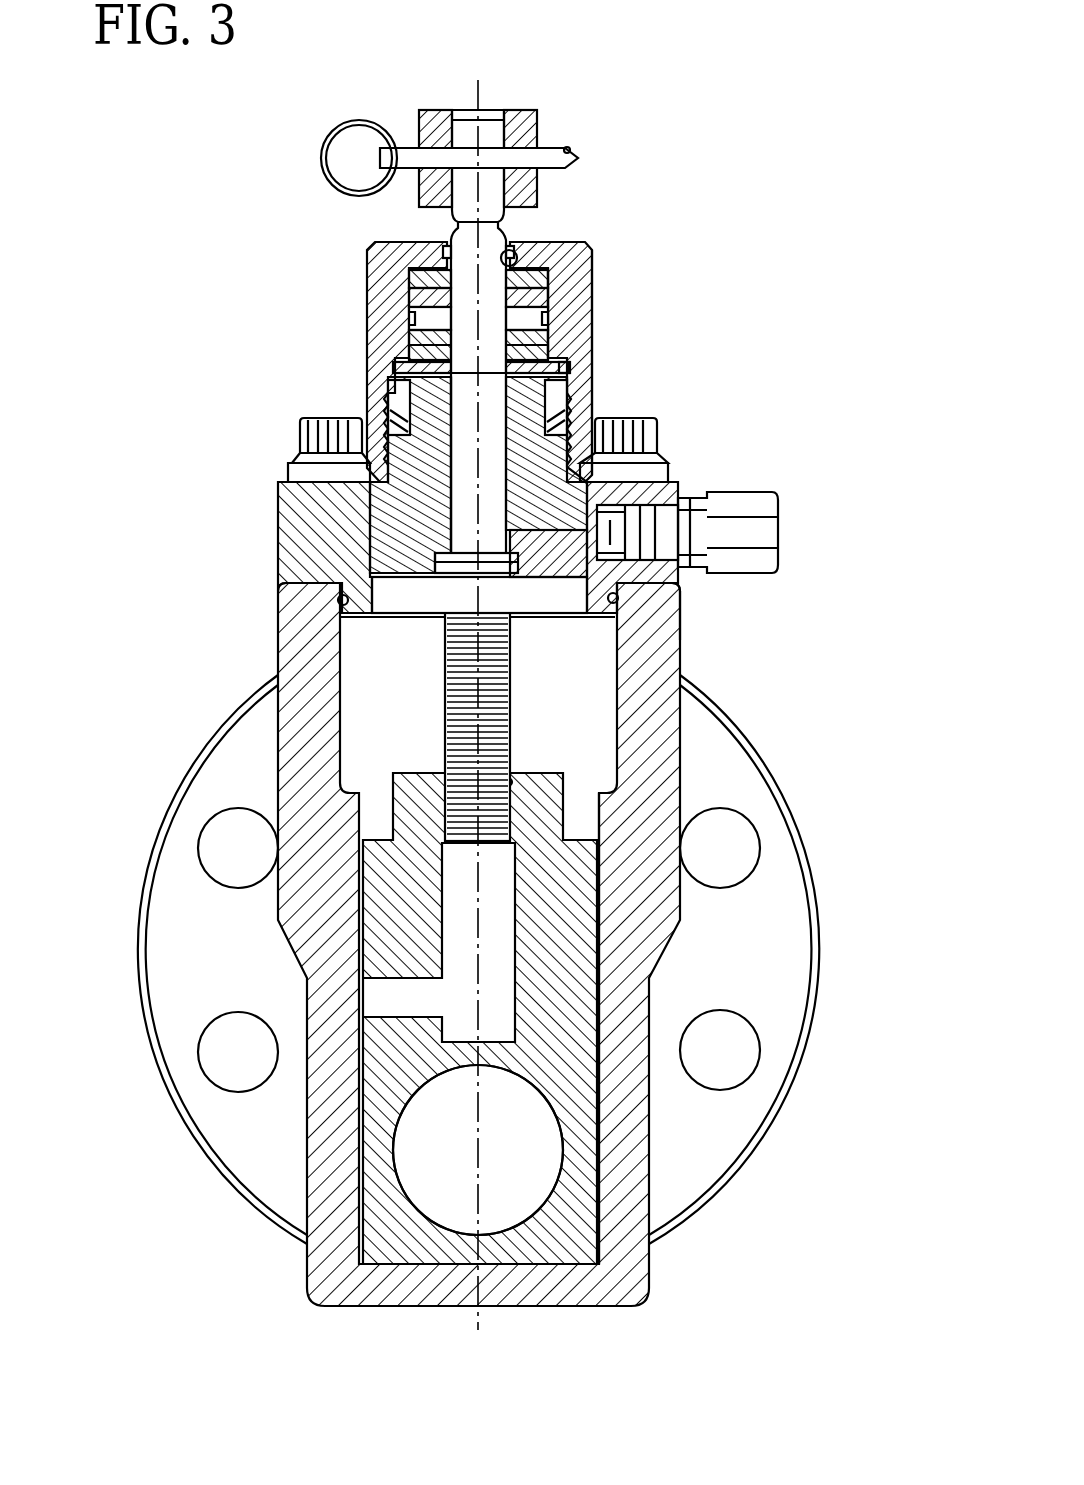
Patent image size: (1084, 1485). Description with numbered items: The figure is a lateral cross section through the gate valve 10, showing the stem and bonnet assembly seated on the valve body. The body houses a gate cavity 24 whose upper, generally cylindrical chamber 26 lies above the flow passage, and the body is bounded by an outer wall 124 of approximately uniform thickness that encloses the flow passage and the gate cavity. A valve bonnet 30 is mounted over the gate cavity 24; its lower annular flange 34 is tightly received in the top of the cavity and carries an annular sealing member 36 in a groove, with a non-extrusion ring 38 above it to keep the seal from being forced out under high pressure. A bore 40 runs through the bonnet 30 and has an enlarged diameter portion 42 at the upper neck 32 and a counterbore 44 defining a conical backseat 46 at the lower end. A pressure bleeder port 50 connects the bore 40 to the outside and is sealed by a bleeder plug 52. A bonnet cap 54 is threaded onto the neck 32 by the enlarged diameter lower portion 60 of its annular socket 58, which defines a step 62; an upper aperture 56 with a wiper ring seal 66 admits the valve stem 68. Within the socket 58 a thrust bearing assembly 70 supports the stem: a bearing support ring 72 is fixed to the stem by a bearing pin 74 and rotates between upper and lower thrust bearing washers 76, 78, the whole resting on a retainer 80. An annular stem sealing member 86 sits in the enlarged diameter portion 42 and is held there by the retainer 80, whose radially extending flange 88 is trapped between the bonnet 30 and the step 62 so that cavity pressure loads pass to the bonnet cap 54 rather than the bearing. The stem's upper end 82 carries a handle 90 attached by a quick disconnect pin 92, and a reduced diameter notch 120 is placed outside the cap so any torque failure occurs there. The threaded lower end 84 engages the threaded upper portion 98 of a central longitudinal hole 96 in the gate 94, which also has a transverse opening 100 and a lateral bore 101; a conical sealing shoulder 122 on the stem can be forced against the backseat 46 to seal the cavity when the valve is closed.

The gate valve 10 is at (715, 272).
The gate cavity 24 is at (340, 665).
The upper, generally cylindrical chamber 26 is at (581, 711).
The valve bonnet 30 is at (685, 488).
The upper neck 32 is at (630, 425).
The lower annular flange 34 is at (650, 620).
The annular sealing member 36 is at (338, 600).
The non-extrusion ring 38 is at (338, 560).
The bore 40 is at (449, 470).
The enlarged diameter portion 42 is at (388, 430).
The counterbore 44 is at (527, 605).
The conical backseat 46 is at (430, 530).
The pressure bleeder port 50 is at (479, 597).
The bleeder plug 52 is at (750, 575).
The bonnet cap 54 is at (596, 332).
The upper aperture 56 is at (511, 252).
The annular socket 58 is at (592, 262).
The enlarged diameter lower portion 60 is at (657, 438).
The step 62 is at (568, 368).
The wiper ring seal 66 is at (445, 252).
The valve stem 68 is at (512, 472).
The thrust bearing assembly 70 is at (552, 325).
The bearing support ring 72 is at (412, 318).
The bearing pin 74 is at (412, 296).
The upper thrust bearing washer 76 is at (412, 278).
The lower thrust bearing washer 78 is at (412, 348).
The retainer 80 is at (397, 368).
The upper end 82 is at (510, 187).
The lower end 84 is at (445, 700).
The annular stem sealing member 86 is at (569, 420).
The radially extending flange 88 is at (395, 410).
The handle 90 is at (532, 112).
The quick disconnect pin 92 is at (580, 155).
The gate 94 is at (606, 1000).
The central longitudinal hole 96 is at (515, 940).
The threaded upper portion 98 is at (509, 780).
The transverse opening 100 is at (545, 1140).
The lateral bore 101 is at (372, 997).
The reduced diameter notch 120 is at (457, 224).
The conical sealing shoulder 122 is at (438, 560).
The outer wall 124 is at (682, 900).